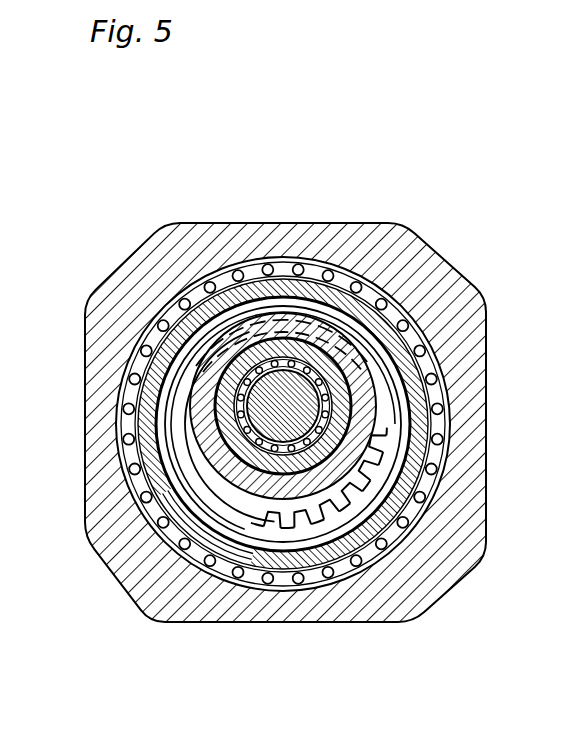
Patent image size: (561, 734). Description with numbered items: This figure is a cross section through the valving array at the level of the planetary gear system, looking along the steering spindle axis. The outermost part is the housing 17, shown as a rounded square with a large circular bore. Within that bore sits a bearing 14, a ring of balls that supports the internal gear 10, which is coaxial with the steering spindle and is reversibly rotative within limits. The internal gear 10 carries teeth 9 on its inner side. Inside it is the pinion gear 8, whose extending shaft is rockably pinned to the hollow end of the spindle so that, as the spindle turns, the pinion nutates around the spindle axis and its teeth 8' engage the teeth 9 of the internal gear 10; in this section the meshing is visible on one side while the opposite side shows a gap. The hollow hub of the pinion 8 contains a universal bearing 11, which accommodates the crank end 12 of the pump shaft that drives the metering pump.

The pinion gear 8 is at (194, 447).
The teeth 8' is at (202, 483).
The teeth 9 is at (230, 532).
The internal gear 10 is at (253, 562).
The universal bearing 11 is at (268, 330).
The crank end 12 is at (320, 345).
The bearing 14 is at (413, 337).
The housing 17 is at (287, 617).